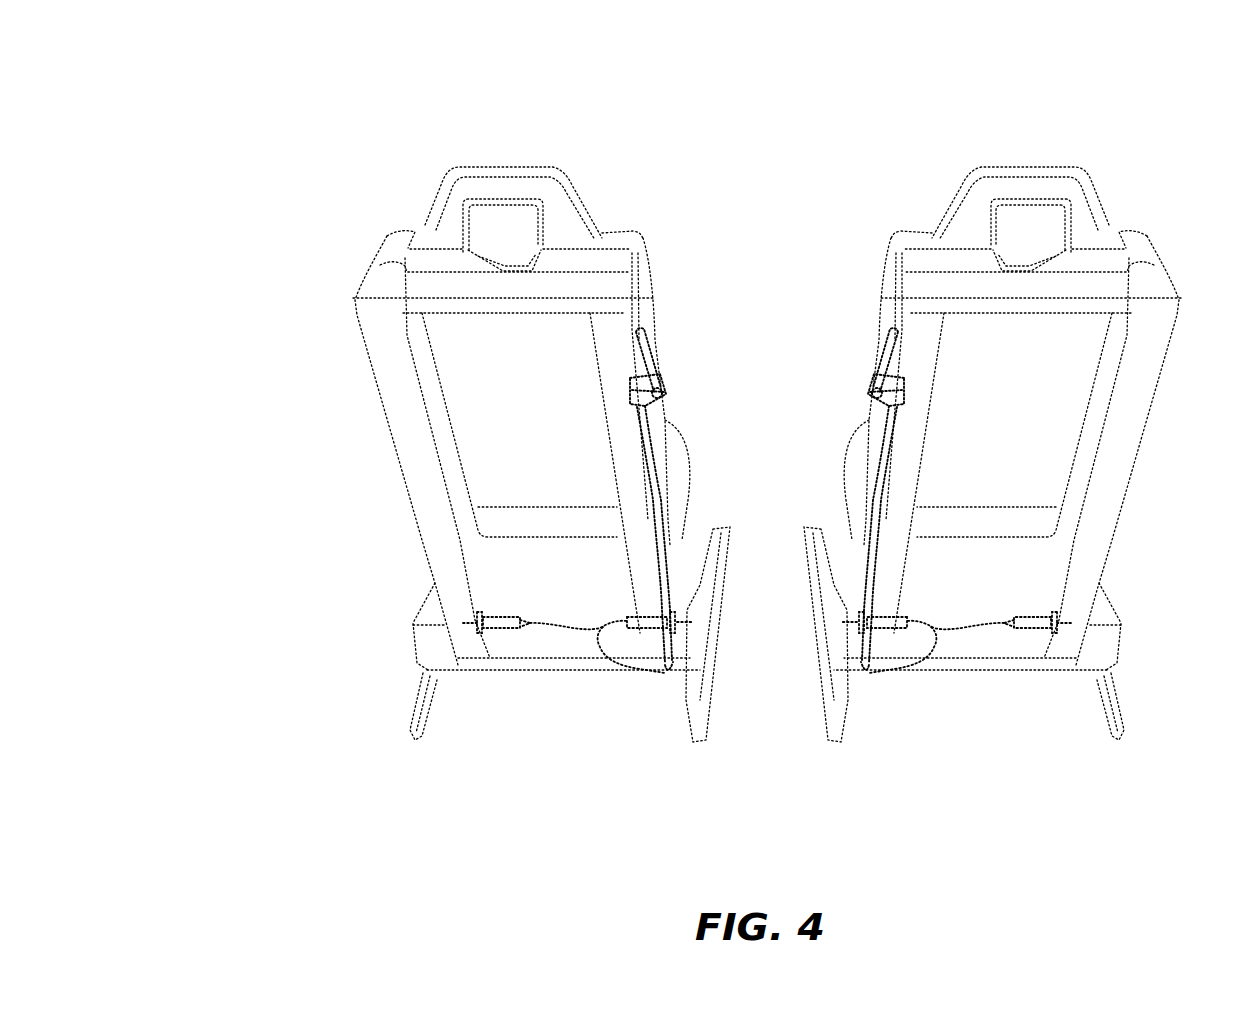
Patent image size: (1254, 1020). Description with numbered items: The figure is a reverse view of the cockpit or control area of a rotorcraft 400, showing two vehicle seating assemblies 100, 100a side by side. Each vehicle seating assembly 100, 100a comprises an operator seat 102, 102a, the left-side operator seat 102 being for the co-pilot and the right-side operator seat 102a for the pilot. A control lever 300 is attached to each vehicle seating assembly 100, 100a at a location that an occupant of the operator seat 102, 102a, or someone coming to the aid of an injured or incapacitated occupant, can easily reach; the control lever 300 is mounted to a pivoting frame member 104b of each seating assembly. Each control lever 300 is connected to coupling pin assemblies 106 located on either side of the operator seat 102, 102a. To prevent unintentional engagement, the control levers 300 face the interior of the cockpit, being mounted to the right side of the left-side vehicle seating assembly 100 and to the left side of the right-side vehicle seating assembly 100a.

The rotorcraft 400 is at (274, 104).
The vehicle seating assembly 100 is at (612, 167).
The vehicle seating assembly 100a is at (835, 167).
The operator seat 102 is at (434, 226).
The operator seat 102a is at (1088, 212).
The pivoting frame member 104b is at (412, 442).
The control lever 300 is at (660, 380).
The coupling pin assembly 106 is at (651, 635).